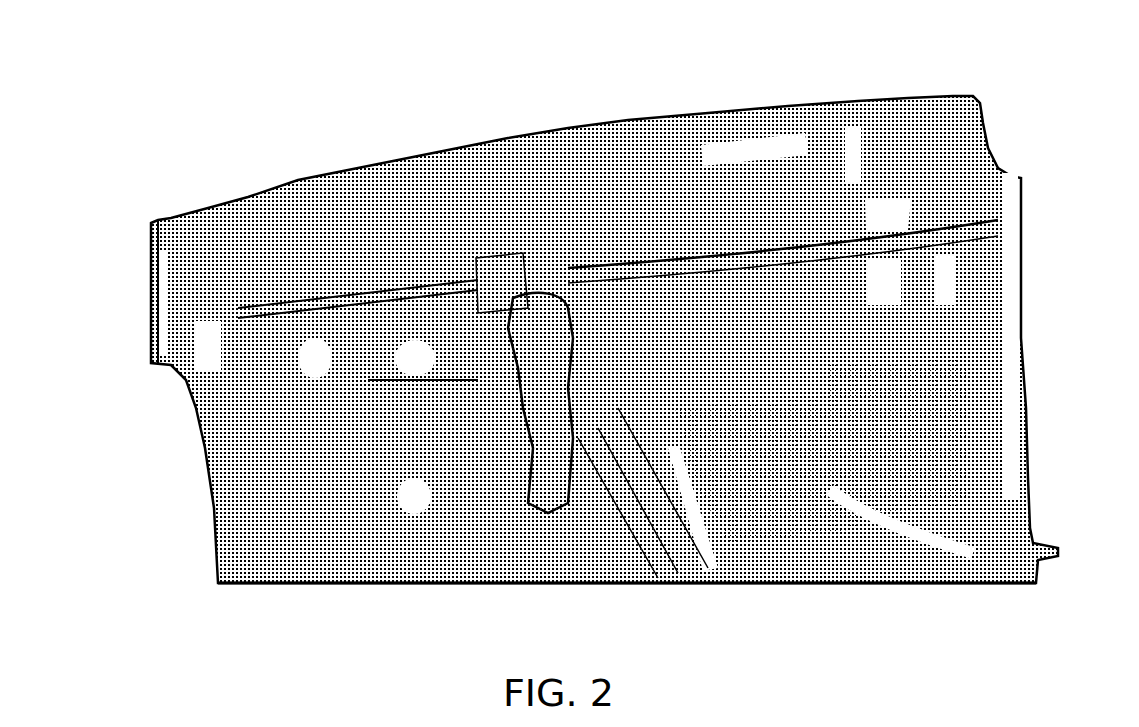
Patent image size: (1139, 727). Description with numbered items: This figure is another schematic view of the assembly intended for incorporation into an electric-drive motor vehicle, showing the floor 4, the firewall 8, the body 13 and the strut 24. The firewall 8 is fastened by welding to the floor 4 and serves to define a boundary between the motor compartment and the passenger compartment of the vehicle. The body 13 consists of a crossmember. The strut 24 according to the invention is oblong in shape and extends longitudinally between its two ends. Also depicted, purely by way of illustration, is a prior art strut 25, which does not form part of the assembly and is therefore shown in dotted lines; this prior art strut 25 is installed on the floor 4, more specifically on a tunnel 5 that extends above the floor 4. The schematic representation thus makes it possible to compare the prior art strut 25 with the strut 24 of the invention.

The floor 4 is at (822, 548).
The tunnel 5 is at (630, 548).
The firewall 8 is at (360, 373).
The body 13 is at (940, 200).
The strut 24 is at (487, 292).
The prior art strut 25 is at (530, 450).